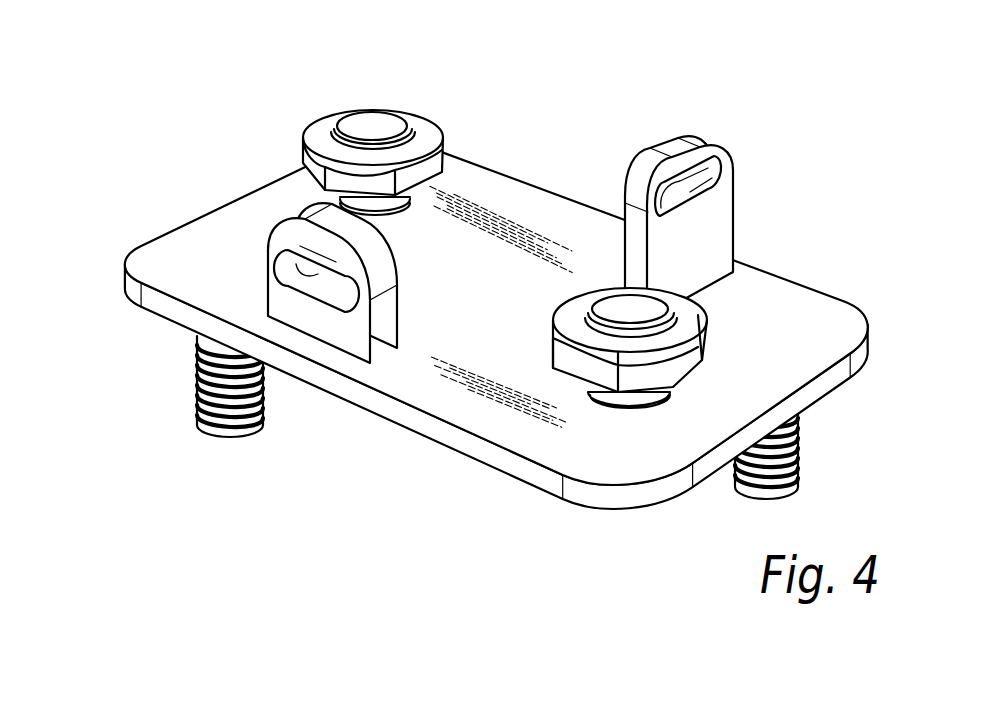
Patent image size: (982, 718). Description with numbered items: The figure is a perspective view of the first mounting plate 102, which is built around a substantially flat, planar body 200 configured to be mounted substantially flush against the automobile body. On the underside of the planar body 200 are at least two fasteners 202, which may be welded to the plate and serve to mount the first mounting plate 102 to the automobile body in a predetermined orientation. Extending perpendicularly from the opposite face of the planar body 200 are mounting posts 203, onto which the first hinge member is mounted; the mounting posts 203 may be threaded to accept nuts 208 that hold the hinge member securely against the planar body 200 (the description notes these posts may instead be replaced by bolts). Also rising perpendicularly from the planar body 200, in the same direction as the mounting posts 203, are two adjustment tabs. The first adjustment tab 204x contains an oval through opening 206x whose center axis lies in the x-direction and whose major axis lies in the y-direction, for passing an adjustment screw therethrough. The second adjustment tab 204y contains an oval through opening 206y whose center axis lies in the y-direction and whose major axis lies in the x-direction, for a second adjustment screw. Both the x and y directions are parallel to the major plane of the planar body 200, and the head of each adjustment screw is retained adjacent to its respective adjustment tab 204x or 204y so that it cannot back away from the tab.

The first mounting plate 102 is at (586, 104).
The planar body 200 is at (443, 402).
The fasteners 202 is at (197, 377).
The mounting posts 203 is at (470, 355).
The first adjustment tab 204x is at (742, 228).
The second adjustment tab 204y is at (226, 248).
The oval through opening 206x is at (703, 181).
The oval through opening 206y is at (280, 300).
The nuts 208 is at (677, 369).